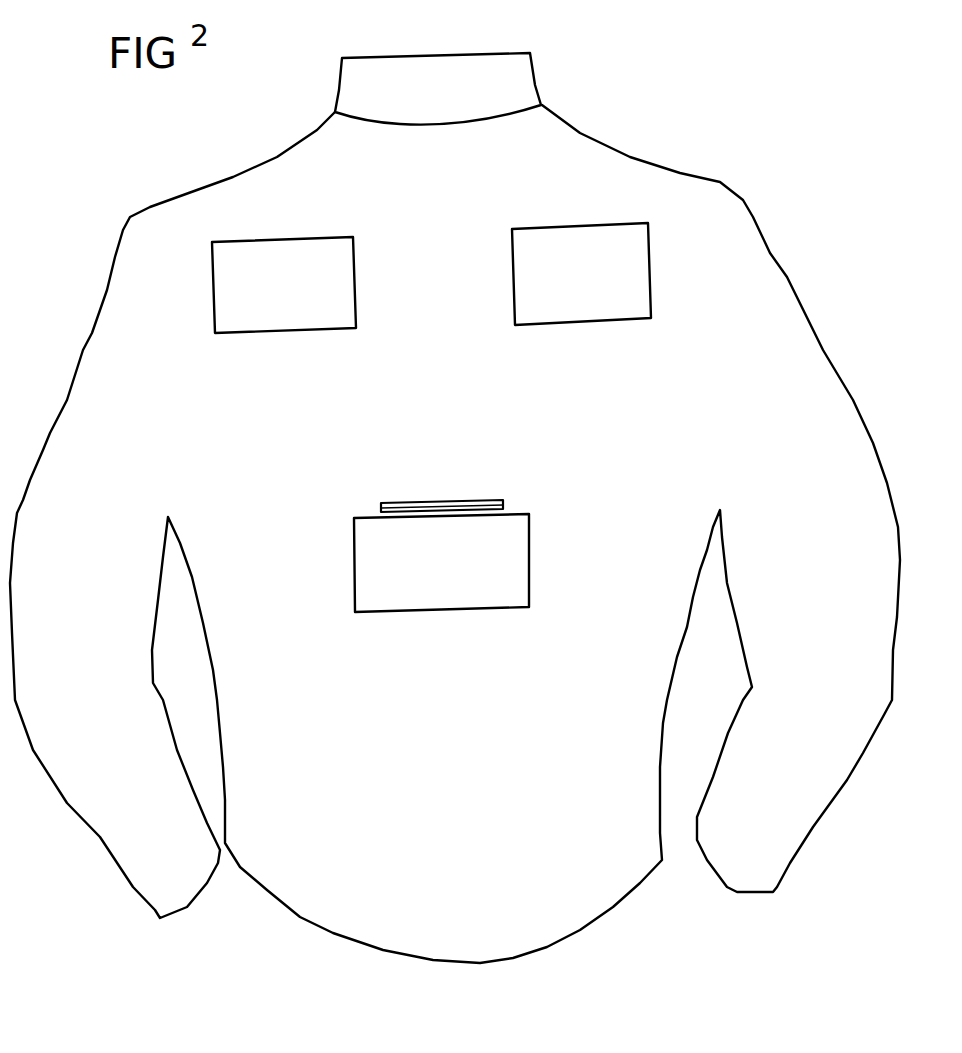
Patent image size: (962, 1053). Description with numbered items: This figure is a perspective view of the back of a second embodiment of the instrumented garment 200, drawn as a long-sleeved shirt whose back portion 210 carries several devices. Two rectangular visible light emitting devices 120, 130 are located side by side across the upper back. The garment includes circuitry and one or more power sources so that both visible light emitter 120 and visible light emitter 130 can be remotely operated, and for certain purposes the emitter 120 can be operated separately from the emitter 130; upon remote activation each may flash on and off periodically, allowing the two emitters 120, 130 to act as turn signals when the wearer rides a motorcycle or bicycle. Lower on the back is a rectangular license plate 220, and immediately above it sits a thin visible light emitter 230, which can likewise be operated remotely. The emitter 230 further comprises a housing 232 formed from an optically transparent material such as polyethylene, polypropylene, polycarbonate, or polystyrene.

The garment 200 is at (455, 518).
The shirt body 210 is at (738, 308).
The visible light emitting device 120 is at (296, 288).
The visible light emitting device 130 is at (616, 267).
The license plate 220 is at (462, 573).
The visible light emitter 230 is at (453, 505).
The housing 232 is at (503, 500).